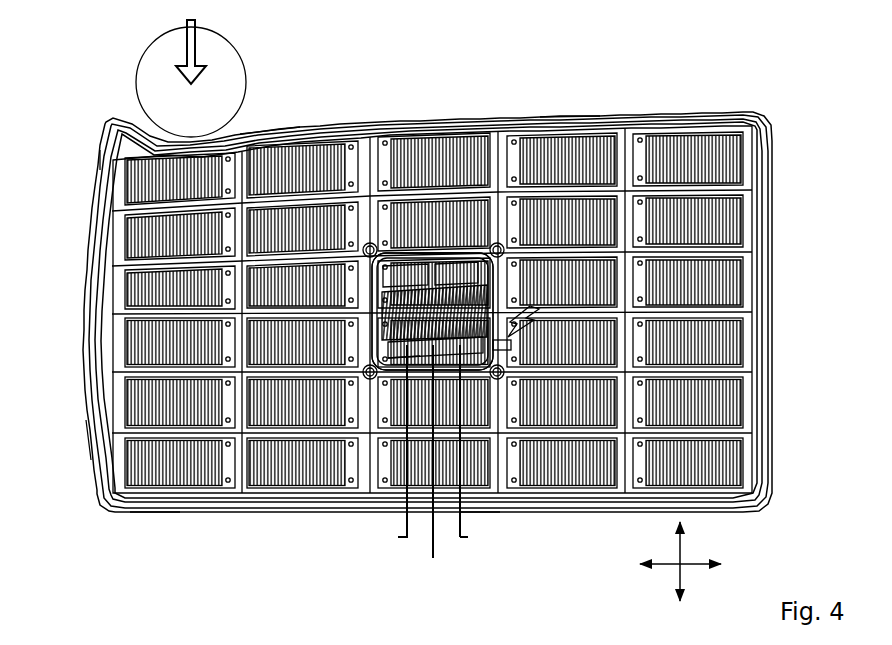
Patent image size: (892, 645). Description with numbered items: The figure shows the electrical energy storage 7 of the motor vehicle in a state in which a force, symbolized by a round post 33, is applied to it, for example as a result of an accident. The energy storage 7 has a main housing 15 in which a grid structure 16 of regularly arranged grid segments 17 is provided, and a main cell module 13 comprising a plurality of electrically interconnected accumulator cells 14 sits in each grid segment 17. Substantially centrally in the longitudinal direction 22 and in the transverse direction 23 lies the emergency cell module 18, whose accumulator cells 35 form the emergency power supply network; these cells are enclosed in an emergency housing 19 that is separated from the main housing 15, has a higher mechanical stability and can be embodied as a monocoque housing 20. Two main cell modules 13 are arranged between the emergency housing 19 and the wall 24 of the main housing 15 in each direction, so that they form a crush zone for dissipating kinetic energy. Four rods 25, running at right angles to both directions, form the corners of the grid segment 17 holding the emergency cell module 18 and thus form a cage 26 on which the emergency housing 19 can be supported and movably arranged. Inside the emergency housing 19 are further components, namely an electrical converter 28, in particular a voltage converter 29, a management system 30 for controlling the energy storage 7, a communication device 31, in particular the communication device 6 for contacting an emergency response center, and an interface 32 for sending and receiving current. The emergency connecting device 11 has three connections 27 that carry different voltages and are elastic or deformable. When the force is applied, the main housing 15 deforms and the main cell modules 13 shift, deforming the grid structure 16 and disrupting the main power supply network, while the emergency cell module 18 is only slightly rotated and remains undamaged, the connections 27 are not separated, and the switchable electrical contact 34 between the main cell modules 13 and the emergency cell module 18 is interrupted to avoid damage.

The communication device 6 is at (259, 310).
The electrical energy storage 7 is at (788, 100).
The emergency connecting device 11 is at (480, 538).
The main cell modules 13 is at (268, 135).
The accumulator cells 14 is at (130, 205).
The main housing 15 is at (569, 103).
The grid structure 16 is at (112, 444).
The grid segments 17 is at (438, 309).
The emergency cell module 18 is at (447, 243).
The emergency housing 19 is at (412, 181).
The monocoque housing 20 is at (393, 275).
The longitudinal direction 22 is at (660, 567).
The transverse direction 23 is at (683, 545).
The wall 24 is at (152, 510).
The rods 25 is at (503, 383).
The cage 26 is at (388, 300).
The connections 27 is at (402, 539).
The electrical converter 28 is at (474, 448).
The voltage converter 29 is at (478, 356).
The management system 30 is at (473, 273).
The communication device 31 is at (398, 275).
The interface 32 is at (397, 353).
The round post 33 is at (179, 119).
The switchable electrical contact 34 is at (515, 338).
The accumulator cells 35 is at (362, 328).